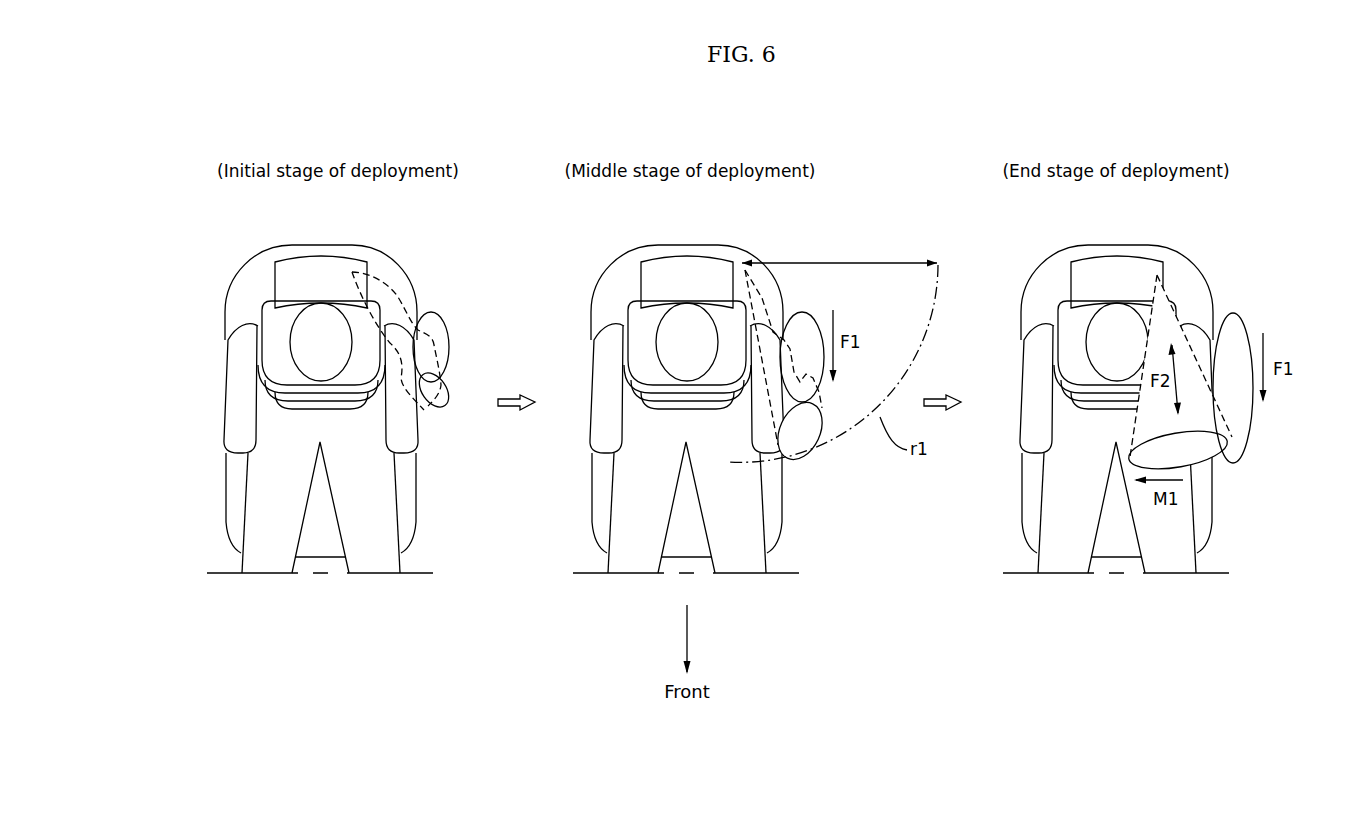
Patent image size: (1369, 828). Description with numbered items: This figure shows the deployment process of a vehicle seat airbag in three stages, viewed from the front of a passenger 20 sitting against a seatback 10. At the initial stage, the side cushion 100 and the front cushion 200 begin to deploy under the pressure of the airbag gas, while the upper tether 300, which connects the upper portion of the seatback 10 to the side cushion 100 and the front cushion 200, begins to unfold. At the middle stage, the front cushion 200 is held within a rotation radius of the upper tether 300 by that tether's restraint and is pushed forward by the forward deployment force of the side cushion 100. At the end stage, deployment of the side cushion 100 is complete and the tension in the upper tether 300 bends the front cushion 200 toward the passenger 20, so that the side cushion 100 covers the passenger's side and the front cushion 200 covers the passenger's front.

The seatback 10 is at (252, 285).
The passenger 20 is at (277, 337).
The side cushion 100 is at (433, 322).
The front cushion 200 is at (443, 400).
The upper tether 300 is at (378, 293).